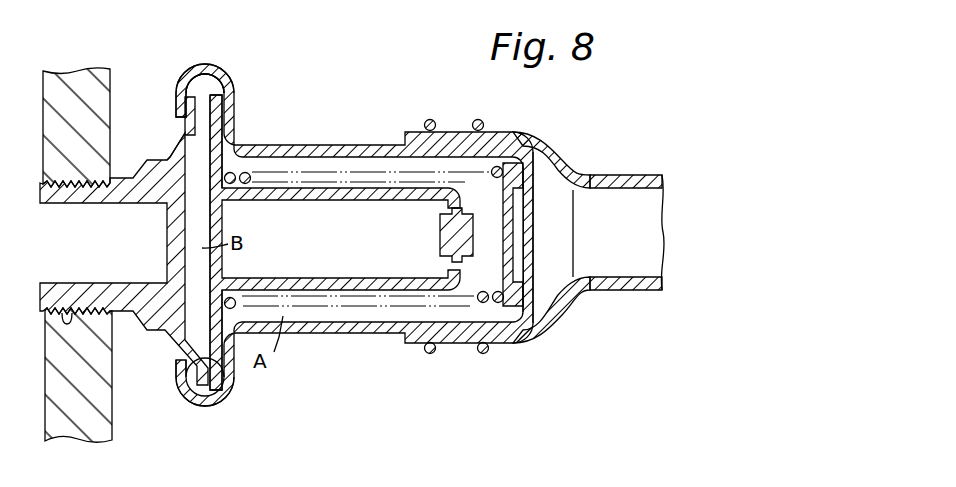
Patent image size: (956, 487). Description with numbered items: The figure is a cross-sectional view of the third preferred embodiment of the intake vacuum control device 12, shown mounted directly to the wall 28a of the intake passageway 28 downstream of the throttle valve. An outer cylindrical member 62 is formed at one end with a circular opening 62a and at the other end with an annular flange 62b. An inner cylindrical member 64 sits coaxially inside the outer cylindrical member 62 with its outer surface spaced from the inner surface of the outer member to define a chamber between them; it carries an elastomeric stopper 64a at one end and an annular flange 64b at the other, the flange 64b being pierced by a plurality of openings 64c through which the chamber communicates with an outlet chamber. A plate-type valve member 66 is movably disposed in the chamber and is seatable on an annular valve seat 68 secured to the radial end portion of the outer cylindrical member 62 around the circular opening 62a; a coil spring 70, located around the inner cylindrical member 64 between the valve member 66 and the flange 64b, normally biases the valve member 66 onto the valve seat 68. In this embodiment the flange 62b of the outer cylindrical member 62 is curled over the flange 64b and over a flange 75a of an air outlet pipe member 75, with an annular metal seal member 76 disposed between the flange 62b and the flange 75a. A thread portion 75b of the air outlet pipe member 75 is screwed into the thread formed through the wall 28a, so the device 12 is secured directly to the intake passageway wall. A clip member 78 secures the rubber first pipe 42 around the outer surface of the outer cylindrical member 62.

The intake vacuum control device 12 is at (360, 130).
The intake passageway 28 is at (32, 307).
The wall of intake passageway 28a is at (55, 389).
The first pipe 42 is at (640, 292).
The outer cylindrical member 62 is at (330, 325).
The circular opening 62a is at (527, 257).
The annular flange of outer cylindrical member 62b is at (232, 86).
The inner cylindrical member 64 is at (375, 199).
The elastomeric member or stopper 64a is at (440, 249).
The annular flange of inner cylindrical member 64b is at (211, 74).
The openings 64c is at (243, 147).
The valve member 66 is at (540, 226).
The annular valve seat 68 is at (525, 178).
The coil spring 70 is at (336, 180).
The air outlet pipe member 75 is at (108, 292).
The flange of air outlet pipe member 75a is at (183, 137).
The thread portion 75b is at (64, 311).
The annular seal member 76 is at (182, 360).
The clip member 78 is at (483, 355).